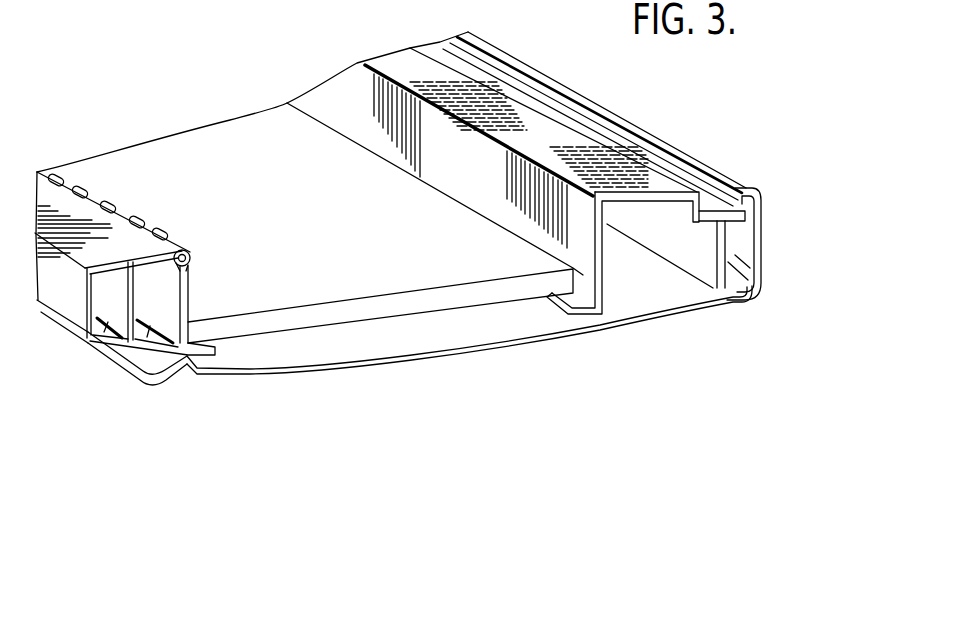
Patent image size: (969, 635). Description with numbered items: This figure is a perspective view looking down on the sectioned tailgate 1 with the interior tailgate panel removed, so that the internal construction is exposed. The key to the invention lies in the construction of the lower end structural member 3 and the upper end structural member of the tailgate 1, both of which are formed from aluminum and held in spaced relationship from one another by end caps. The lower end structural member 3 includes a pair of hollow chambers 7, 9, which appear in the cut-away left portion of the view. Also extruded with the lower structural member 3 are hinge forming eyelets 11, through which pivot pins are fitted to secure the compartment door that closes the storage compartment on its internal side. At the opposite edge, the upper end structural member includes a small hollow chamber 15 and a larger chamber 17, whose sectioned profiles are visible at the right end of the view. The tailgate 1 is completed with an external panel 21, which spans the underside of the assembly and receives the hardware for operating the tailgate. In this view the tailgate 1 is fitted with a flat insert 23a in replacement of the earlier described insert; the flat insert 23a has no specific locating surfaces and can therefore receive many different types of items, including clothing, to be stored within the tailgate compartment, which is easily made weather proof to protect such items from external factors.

The tailgate 1 is at (480, 420).
The lower end structural member 3 is at (115, 362).
The hollow chamber 7 is at (100, 300).
The hollow chamber 9 is at (152, 336).
The hinge forming eyelets 11 is at (190, 252).
The small hollow chamber 15 is at (655, 200).
The larger chamber 17 is at (693, 250).
The external panel 21 is at (518, 350).
The flat insert 23a is at (385, 333).